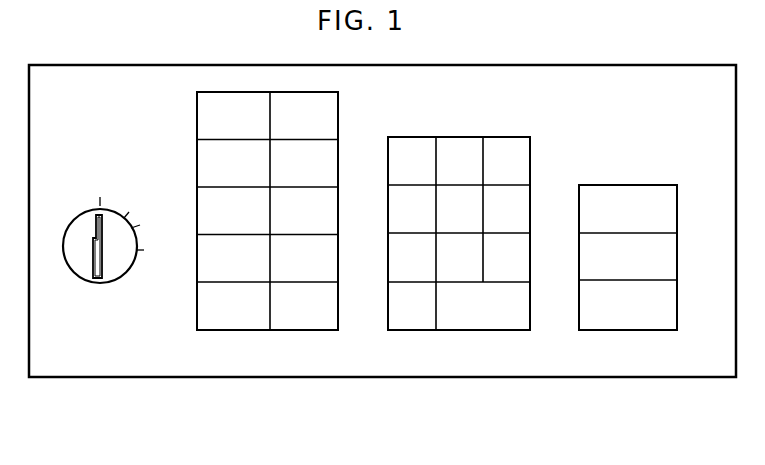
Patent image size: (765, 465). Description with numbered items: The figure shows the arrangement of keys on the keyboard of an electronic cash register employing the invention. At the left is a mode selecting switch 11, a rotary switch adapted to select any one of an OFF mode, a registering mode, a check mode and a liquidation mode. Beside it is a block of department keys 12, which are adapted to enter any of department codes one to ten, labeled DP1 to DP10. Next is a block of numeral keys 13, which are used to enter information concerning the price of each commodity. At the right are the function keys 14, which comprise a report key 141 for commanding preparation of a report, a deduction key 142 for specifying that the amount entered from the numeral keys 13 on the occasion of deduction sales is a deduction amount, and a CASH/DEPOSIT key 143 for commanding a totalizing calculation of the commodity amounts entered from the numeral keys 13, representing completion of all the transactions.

The mode selecting switch 11 is at (104, 283).
The department keys 12 is at (273, 331).
The numeral keys 13 is at (425, 331).
The function keys 14 is at (654, 304).
The report key 141 is at (677, 213).
The deduction key 142 is at (677, 246).
The CASH/DEPOSIT key 143 is at (628, 331).